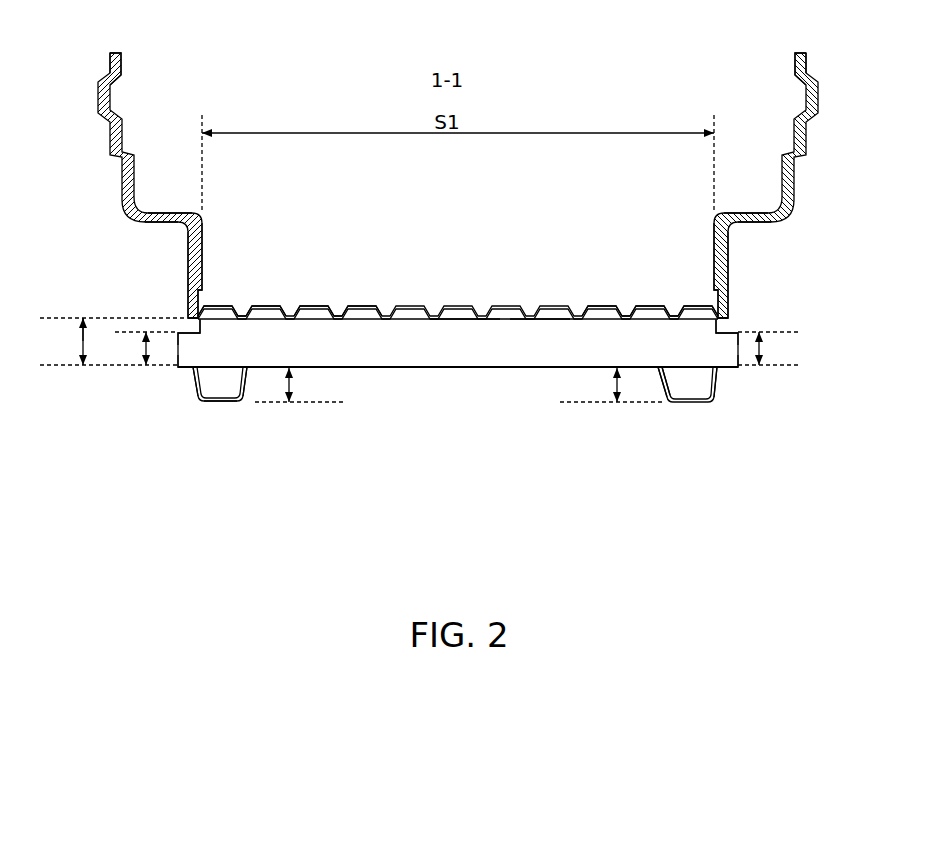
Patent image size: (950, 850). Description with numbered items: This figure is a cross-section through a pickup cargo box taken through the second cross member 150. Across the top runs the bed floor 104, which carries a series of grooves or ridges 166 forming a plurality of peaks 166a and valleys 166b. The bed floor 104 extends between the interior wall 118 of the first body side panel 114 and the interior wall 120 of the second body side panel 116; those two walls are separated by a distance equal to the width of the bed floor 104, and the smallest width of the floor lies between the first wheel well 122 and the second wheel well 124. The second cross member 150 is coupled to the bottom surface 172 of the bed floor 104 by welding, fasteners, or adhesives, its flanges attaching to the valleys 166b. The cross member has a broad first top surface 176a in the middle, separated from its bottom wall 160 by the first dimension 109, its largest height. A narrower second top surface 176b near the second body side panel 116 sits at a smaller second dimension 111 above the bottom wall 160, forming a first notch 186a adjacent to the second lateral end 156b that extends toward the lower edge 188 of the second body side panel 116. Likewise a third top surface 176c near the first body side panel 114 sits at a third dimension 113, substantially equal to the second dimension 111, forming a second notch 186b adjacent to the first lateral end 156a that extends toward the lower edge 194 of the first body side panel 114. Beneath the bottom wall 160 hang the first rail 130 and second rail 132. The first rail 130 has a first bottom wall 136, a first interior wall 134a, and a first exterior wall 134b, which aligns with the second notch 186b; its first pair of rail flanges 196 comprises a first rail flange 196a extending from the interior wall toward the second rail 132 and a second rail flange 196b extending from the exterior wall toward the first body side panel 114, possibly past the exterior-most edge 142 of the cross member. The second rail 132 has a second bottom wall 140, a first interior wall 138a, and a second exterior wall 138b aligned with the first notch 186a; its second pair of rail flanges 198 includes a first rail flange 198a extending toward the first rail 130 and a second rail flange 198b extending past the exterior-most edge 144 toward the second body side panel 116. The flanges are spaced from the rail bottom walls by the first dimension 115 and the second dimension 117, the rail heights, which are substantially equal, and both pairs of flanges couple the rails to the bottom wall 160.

The bed floor 104 is at (333, 306).
The first dimension 109 is at (82, 341).
The second dimension 111 is at (145, 347).
The third dimension 113 is at (760, 347).
The first body side panel 114 is at (819, 104).
The first dimension 115 is at (617, 392).
The second body side panel 116 is at (110, 78).
The second dimension 117 is at (290, 392).
The interior wall 118 is at (794, 113).
The interior wall 120 is at (122, 120).
The first wheel well 122 is at (759, 212).
The second wheel well 124 is at (134, 200).
The first rail 130 is at (688, 397).
The second rail 132 is at (224, 396).
The first interior wall 134a is at (662, 385).
The first exterior wall 134b is at (708, 385).
The first bottom wall 136 is at (666, 385).
The first interior wall 138a is at (244, 385).
The second exterior wall 138b is at (197, 386).
The second bottom wall 140 is at (222, 402).
The exterior-most edge 142 is at (736, 330).
The exterior-most edge 144 is at (181, 330).
The second cross member 150 is at (425, 335).
The first lateral end 156a is at (738, 367).
The second lateral end 156b is at (178, 367).
The bottom wall 160 is at (380, 369).
The grooves or ridges 166 is at (458, 304).
The peaks 166a is at (228, 306).
The valleys 166b is at (625, 306).
The bottom surface 172 is at (540, 322).
The first top surface 176a is at (465, 322).
The second top surface 176b is at (186, 324).
The third top surface 176c is at (731, 324).
The first notch 186a is at (195, 375).
The second notch 186b is at (716, 372).
The lower edge 188 is at (190, 316).
The lower edge 194 is at (727, 316).
The first pair of rail flanges 196 is at (670, 361).
The first rail flange 196a is at (653, 361).
The second rail flange 196b is at (721, 361).
The second pair of rail flanges 198 is at (242, 361).
The first rail flange 198a is at (260, 361).
The second rail flange 198b is at (187, 361).